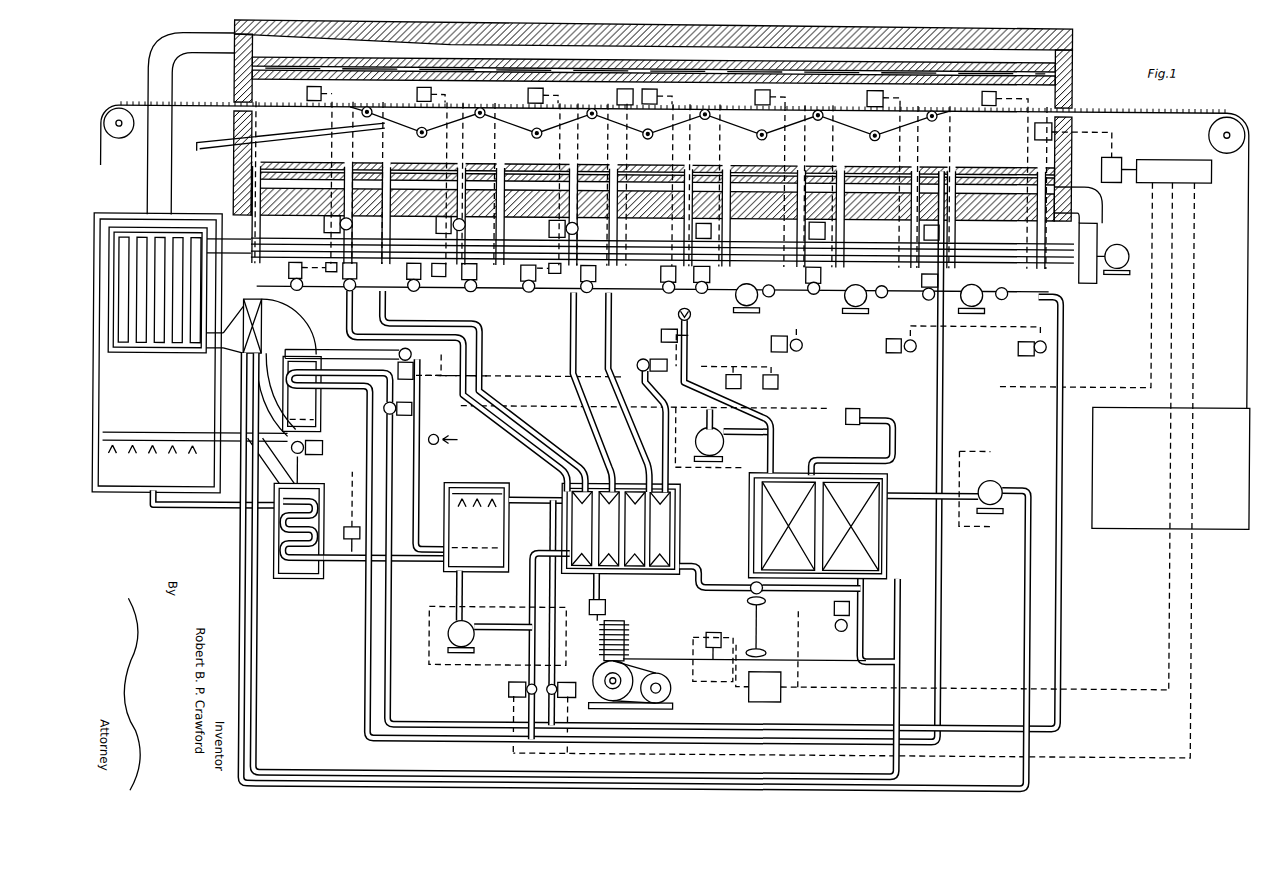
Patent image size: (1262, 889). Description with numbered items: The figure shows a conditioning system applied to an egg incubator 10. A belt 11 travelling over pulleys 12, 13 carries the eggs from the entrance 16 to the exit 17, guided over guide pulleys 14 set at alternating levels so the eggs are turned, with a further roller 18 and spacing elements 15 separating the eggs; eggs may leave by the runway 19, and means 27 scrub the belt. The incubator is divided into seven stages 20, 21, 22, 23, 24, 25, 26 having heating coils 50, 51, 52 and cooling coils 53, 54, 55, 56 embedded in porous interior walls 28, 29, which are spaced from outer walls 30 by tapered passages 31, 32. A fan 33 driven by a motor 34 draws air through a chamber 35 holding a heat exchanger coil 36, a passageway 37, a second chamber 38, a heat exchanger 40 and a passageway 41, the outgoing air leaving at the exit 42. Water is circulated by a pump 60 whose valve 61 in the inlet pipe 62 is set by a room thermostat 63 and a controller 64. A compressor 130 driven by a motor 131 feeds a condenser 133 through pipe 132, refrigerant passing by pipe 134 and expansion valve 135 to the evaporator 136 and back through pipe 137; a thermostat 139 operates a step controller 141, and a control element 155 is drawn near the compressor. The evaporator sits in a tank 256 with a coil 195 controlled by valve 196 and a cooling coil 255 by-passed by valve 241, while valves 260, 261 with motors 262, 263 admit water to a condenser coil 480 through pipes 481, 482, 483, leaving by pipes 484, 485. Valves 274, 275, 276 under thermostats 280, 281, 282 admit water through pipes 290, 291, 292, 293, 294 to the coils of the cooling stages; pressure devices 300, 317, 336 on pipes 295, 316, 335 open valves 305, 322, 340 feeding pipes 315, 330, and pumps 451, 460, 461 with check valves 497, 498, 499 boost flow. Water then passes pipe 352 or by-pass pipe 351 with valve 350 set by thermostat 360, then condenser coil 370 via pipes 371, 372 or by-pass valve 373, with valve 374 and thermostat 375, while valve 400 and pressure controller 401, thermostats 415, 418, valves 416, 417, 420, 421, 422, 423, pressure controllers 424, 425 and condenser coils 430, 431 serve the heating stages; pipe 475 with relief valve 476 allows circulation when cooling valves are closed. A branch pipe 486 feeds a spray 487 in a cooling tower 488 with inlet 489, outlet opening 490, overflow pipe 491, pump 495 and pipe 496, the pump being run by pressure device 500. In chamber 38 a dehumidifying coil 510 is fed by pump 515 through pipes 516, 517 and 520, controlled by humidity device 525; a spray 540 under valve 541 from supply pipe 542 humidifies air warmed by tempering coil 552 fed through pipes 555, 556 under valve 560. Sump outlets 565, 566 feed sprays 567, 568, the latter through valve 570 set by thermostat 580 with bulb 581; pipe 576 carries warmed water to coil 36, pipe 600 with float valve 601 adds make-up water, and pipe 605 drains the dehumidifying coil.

The egg incubator 10 is at (1074, 40).
The belt 11 is at (190, 123).
The pulley 12 is at (122, 139).
The pulley 13 is at (1208, 127).
The guide pulleys 14 is at (928, 118).
The spacing elements 15 is at (185, 104).
The entrance 16 is at (234, 110).
The exit 17 is at (1074, 105).
The belt roller 18 is at (402, 112).
The runway 19 is at (291, 131).
The first stage 20 is at (278, 124).
The second stage 21 is at (392, 146).
The third stage 22 is at (505, 148).
The fourth stage 23 is at (634, 149).
The fifth stage 24 is at (725, 149).
The sixth stage 25 is at (835, 149).
The seventh stage 26 is at (965, 148).
The belt scrubbing and disinfecting means 27 is at (1207, 475).
The upper interior wall 28 is at (486, 50).
The lower interior wall 29 is at (662, 254).
The outer walls 30 is at (236, 181).
The lower passageway 31 is at (738, 223).
The upper passageway 32 is at (576, 50).
The fan 33 is at (1089, 276).
The motor 34 is at (1120, 270).
The chamber 35 is at (275, 575).
The heat exchanger coil 36 is at (322, 572).
The passageway 37 is at (268, 470).
The second chamber 38 is at (323, 410).
The heat exchanger 40 is at (160, 347).
The passageway 41 is at (124, 492).
The exit 42 is at (215, 471).
The heating coil 50 is at (292, 175).
The heating coil 51 is at (418, 176).
The heating coil 52 is at (527, 178).
The cooling coil 53 is at (665, 178).
The cooling coil 54 is at (752, 178).
The cooling coil 55 is at (865, 178).
The cooling coil 56 is at (992, 178).
The pump 60 is at (716, 458).
The valve 61 is at (642, 356).
The inlet pipe 62 is at (706, 404).
The room thermostat 63 is at (736, 390).
The controller 64 is at (769, 390).
The compressor 130 is at (635, 645).
The motor 131 is at (672, 692).
The pipe 132 is at (612, 603).
The condenser 133 is at (683, 544).
The pipe 134 is at (715, 582).
The expansion valve 135 is at (770, 588).
The evaporator 136 is at (851, 526).
The pipe 137 is at (842, 652).
The thermostat 139 is at (1035, 124).
The step controller 141 is at (862, 455).
The control 155 is at (724, 630).
The coil 195 is at (818, 476).
The valve 196 is at (852, 606).
The valve 241 is at (864, 413).
The cooling coil 255 is at (789, 526).
The tank 256 is at (752, 544).
The valve 260 is at (532, 682).
The valve 261 is at (562, 668).
The valve motor 262 is at (513, 687).
The valve motor 263 is at (566, 686).
The valve 274 is at (804, 341).
The valve 275 is at (916, 345).
The valve 276 is at (1040, 347).
The thermostat 280 is at (755, 92).
The thermostat 281 is at (867, 92).
The thermostat 282 is at (982, 92).
The pipe 290 is at (750, 428).
The pipe 291 is at (785, 428).
The pipe 292 is at (970, 428).
The pipe 293 is at (1048, 308).
The pipe 294 is at (1036, 226).
The pipe 295 is at (940, 226).
The pressure responsive device 300 is at (930, 218).
The valve 305 is at (930, 294).
The pipe 315 is at (925, 226).
The pipe 316 is at (851, 231).
The pressure controller 317 is at (820, 212).
The valve 322 is at (817, 292).
The pipe 330 is at (810, 226).
The pipe 335 is at (722, 246).
The pressure controller 336 is at (704, 212).
The valve 340 is at (708, 290).
The valve 350 is at (673, 308).
The by-pass pipe 351 is at (636, 290).
The pipe 352 is at (697, 226).
The thermostat 360 is at (655, 105).
The coil 370 is at (668, 520).
The pipe 371 is at (606, 329).
The pipe 372 is at (570, 332).
The valve 373 is at (590, 290).
The valve 374 is at (550, 226).
The thermostat 375 is at (528, 92).
The valve 400 is at (536, 289).
The pressure controller 401 is at (545, 284).
The thermostat 415 is at (417, 92).
The valve 416 is at (437, 222).
The valve 417 is at (467, 285).
The thermostat 418 is at (307, 92).
The valve 420 is at (325, 222).
The valve 421 is at (354, 290).
The valve 422 is at (414, 290).
The valve 423 is at (302, 290).
The pressure controller 424 is at (450, 280).
The pressure controller 425 is at (319, 270).
The coil 430 is at (645, 532).
The coil 431 is at (625, 572).
The pump 451 is at (985, 294).
The pump 460 is at (856, 310).
The pump 461 is at (728, 334).
The pipe 475 is at (706, 375).
The pressure relief valve 476 is at (689, 329).
The coil 480 is at (583, 482).
The pipe 481 is at (1067, 562).
The pipe 482 is at (532, 653).
The pipe 483 is at (542, 636).
The pipe 484 is at (559, 600).
The pipe 485 is at (946, 655).
The branch pipe 486 is at (532, 493).
The spray 487 is at (480, 485).
The cooling tower 488 is at (498, 568).
The inlet 489 is at (512, 520).
The outlet opening 490 is at (498, 480).
The outlet pipe 491 is at (470, 586).
The pump 495 is at (455, 650).
The pipe 496 is at (503, 631).
The check valve 497 is at (1001, 281).
The check valve 498 is at (880, 280).
The check valve 499 is at (770, 280).
The pressure responsive device 500 is at (602, 622).
The dehumidifying coil 510 is at (263, 320).
The pump 515 is at (1003, 472).
The pipe 516 is at (925, 487).
The pipe 517 is at (1027, 597).
The pipe 520 is at (300, 770).
The humidity responsive device 525 is at (617, 92).
The spray 540 is at (328, 345).
The valve 541 is at (442, 448).
The supply pipe 542 is at (442, 446).
The tempering coil 552 is at (326, 390).
The pipe 555 is at (420, 722).
The pipe 556 is at (368, 689).
The valve 560 is at (400, 418).
The outlet pipe 565 is at (250, 420).
The outlet 566 is at (325, 446).
The spray 567 is at (148, 436).
The spray 568 is at (312, 470).
The valve 570 is at (314, 456).
The pipe 576 is at (224, 506).
The thermostat 580 is at (365, 562).
The bulb 581 is at (341, 512).
The pipe 600 is at (463, 518).
The float valve 601 is at (477, 521).
The pipe 605 is at (258, 378).